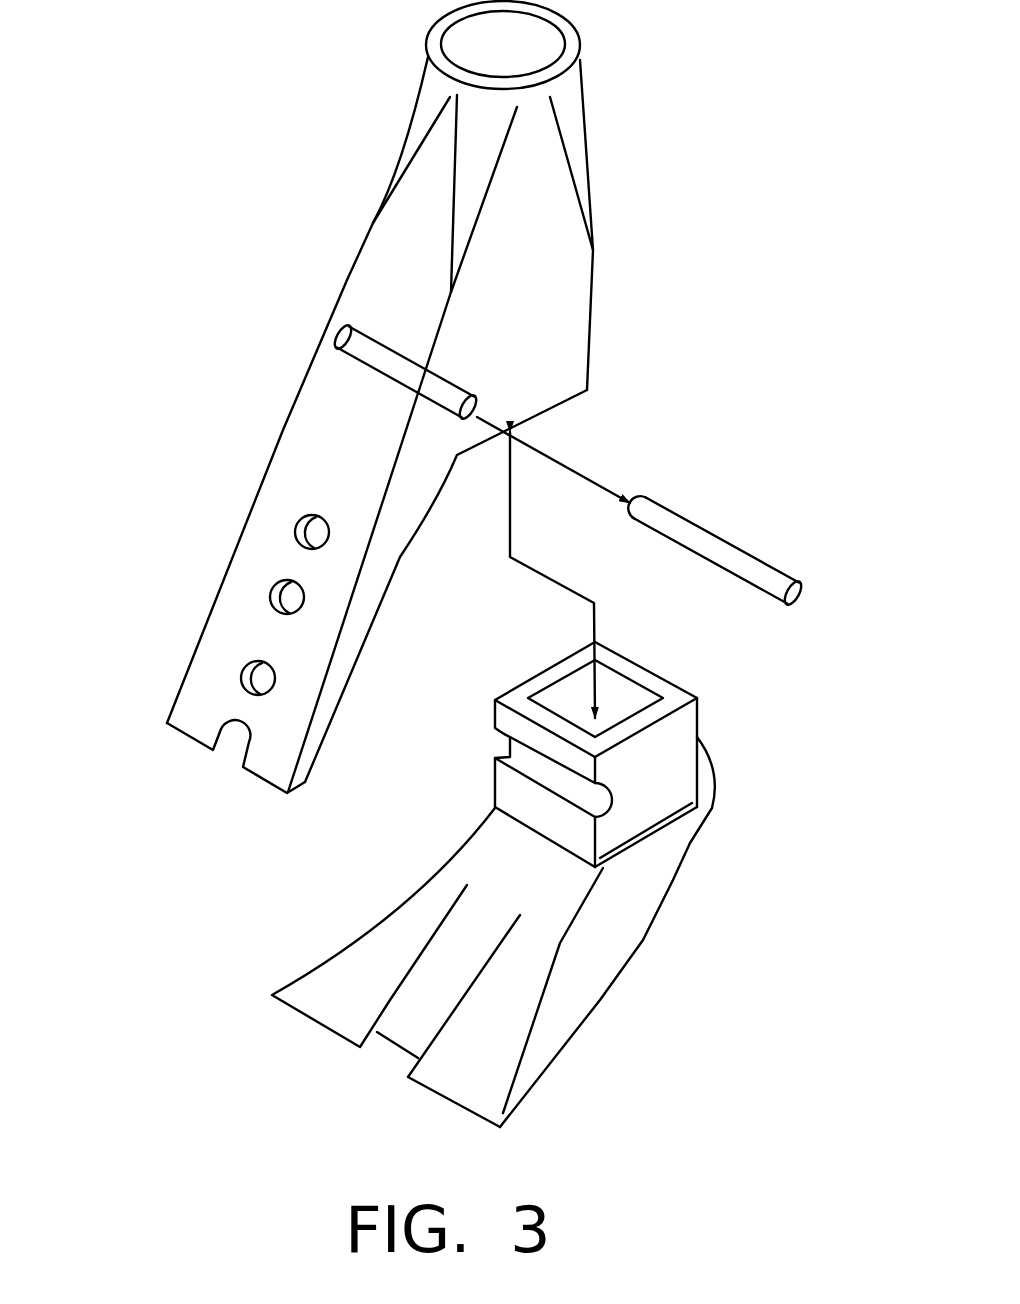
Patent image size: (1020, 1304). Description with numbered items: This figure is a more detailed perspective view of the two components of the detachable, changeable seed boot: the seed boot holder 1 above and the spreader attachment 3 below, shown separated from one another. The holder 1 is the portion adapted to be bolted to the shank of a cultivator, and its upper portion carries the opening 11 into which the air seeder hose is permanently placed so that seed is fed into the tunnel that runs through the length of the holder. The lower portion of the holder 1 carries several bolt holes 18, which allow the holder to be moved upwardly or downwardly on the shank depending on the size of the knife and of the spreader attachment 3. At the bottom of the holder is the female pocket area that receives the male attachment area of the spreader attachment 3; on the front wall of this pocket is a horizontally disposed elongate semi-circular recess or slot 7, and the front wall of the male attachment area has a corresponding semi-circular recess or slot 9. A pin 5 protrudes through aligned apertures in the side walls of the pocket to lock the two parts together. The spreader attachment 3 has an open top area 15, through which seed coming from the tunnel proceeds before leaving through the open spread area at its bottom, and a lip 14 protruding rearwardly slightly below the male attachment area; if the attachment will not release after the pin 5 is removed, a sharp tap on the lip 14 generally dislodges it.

The seed boot holder 1 is at (343, 277).
The spreader attachment 3 is at (613, 930).
The pin 5 is at (731, 534).
The semi-circular recess or slot 7 is at (395, 385).
The semi-circular recess or slot 9 is at (542, 787).
The opening 11 is at (503, 40).
The lip 14 is at (718, 777).
The open top area 15 is at (640, 712).
The bolt holes 18 is at (270, 587).